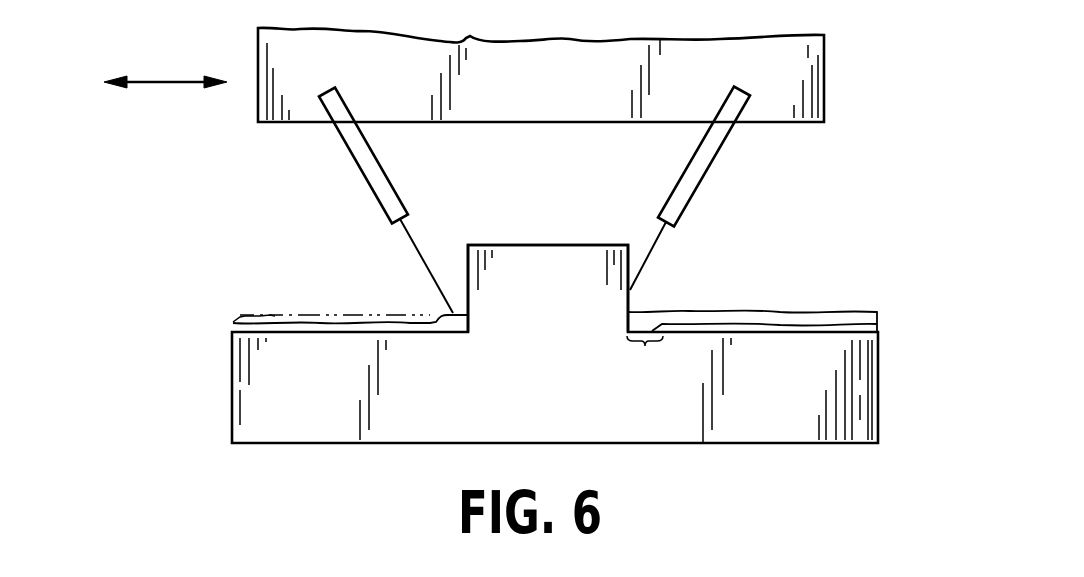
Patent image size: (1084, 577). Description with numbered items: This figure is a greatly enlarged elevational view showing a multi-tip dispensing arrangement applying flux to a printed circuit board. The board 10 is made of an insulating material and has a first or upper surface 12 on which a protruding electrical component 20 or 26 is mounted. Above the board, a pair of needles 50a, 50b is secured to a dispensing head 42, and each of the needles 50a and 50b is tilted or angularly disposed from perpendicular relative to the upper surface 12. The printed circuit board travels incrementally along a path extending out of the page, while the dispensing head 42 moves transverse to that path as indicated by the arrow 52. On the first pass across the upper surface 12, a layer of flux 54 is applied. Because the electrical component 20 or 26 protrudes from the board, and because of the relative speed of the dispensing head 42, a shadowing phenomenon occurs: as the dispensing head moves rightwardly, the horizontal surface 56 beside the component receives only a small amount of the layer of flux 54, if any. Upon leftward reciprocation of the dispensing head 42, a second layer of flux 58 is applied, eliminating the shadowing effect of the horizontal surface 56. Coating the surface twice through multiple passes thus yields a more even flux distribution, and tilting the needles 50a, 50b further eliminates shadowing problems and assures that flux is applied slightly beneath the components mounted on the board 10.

The board 10 is at (589, 324).
The first or upper surface 12 is at (845, 330).
The electrical component 20 is at (548, 264).
The electrical component 26 is at (510, 265).
The dispensing head 42 is at (810, 74).
The needle 50a is at (382, 184).
The needle 50b is at (687, 197).
The arrow 52 is at (180, 82).
The layer of flux 54 is at (256, 350).
The horizontal surface 56 is at (650, 361).
The second layer of flux 58 is at (781, 317).